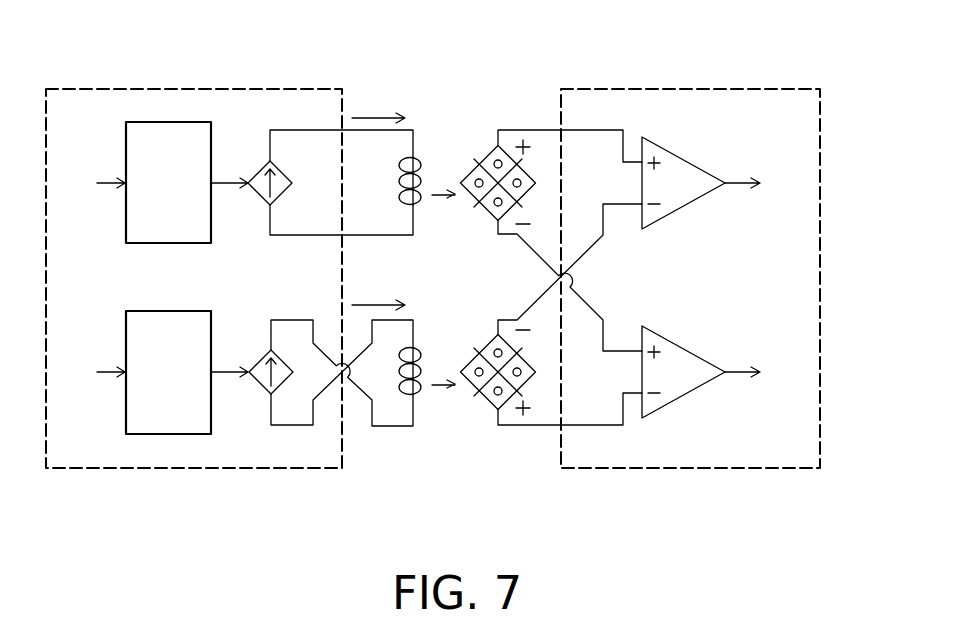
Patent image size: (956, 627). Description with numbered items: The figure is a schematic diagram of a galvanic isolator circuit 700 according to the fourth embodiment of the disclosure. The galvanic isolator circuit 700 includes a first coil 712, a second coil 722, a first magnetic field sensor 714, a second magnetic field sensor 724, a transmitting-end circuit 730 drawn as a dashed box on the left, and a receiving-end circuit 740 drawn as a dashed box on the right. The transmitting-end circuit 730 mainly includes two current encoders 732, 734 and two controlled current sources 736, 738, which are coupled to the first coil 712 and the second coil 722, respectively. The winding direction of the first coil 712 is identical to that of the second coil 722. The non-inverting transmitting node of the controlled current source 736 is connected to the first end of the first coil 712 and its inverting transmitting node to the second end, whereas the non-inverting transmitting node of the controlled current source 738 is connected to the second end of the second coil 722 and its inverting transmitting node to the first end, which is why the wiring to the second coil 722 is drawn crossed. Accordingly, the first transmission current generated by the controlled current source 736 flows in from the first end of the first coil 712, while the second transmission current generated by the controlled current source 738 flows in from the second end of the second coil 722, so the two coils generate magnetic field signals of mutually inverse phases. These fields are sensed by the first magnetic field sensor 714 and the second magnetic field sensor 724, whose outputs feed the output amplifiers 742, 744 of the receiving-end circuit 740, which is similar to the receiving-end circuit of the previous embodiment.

The galvanic isolator circuit 700 is at (760, 551).
The first coil 712 is at (422, 160).
The first magnetic field sensor 714 is at (489, 154).
The second coil 722 is at (422, 350).
The second magnetic field sensor 724 is at (489, 343).
The transmitting-end circuit 730 is at (122, 87).
The current encoder 732 is at (187, 122).
The current encoder 734 is at (189, 434).
The controlled current source 736 is at (253, 193).
The controlled current source 738 is at (253, 382).
The receiving-end circuit 740 is at (639, 87).
The output amplifier 742 is at (684, 158).
The output amplifier 744 is at (684, 347).